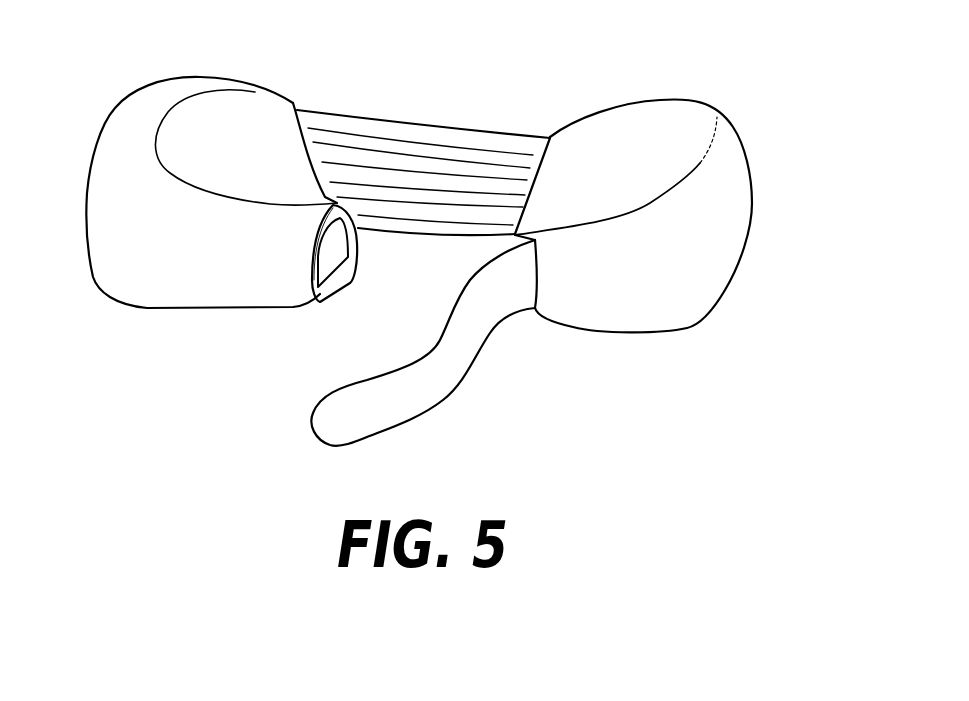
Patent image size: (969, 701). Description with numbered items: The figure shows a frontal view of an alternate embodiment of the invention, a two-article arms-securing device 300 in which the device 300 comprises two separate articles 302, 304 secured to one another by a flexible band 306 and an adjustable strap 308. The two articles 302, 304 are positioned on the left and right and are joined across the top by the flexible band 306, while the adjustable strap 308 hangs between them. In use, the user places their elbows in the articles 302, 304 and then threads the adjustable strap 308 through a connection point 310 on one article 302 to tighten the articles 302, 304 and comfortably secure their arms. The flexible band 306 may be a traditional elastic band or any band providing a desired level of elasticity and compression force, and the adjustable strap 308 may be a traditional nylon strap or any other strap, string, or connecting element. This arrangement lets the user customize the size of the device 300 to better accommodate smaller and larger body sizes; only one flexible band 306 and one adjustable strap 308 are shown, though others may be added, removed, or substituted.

The device 300 is at (780, 85).
The article 302 is at (97, 280).
The article 304 is at (730, 277).
The flexible band 306 is at (447, 130).
The adjustable strap 308 is at (440, 400).
The connection point 310 is at (320, 297).